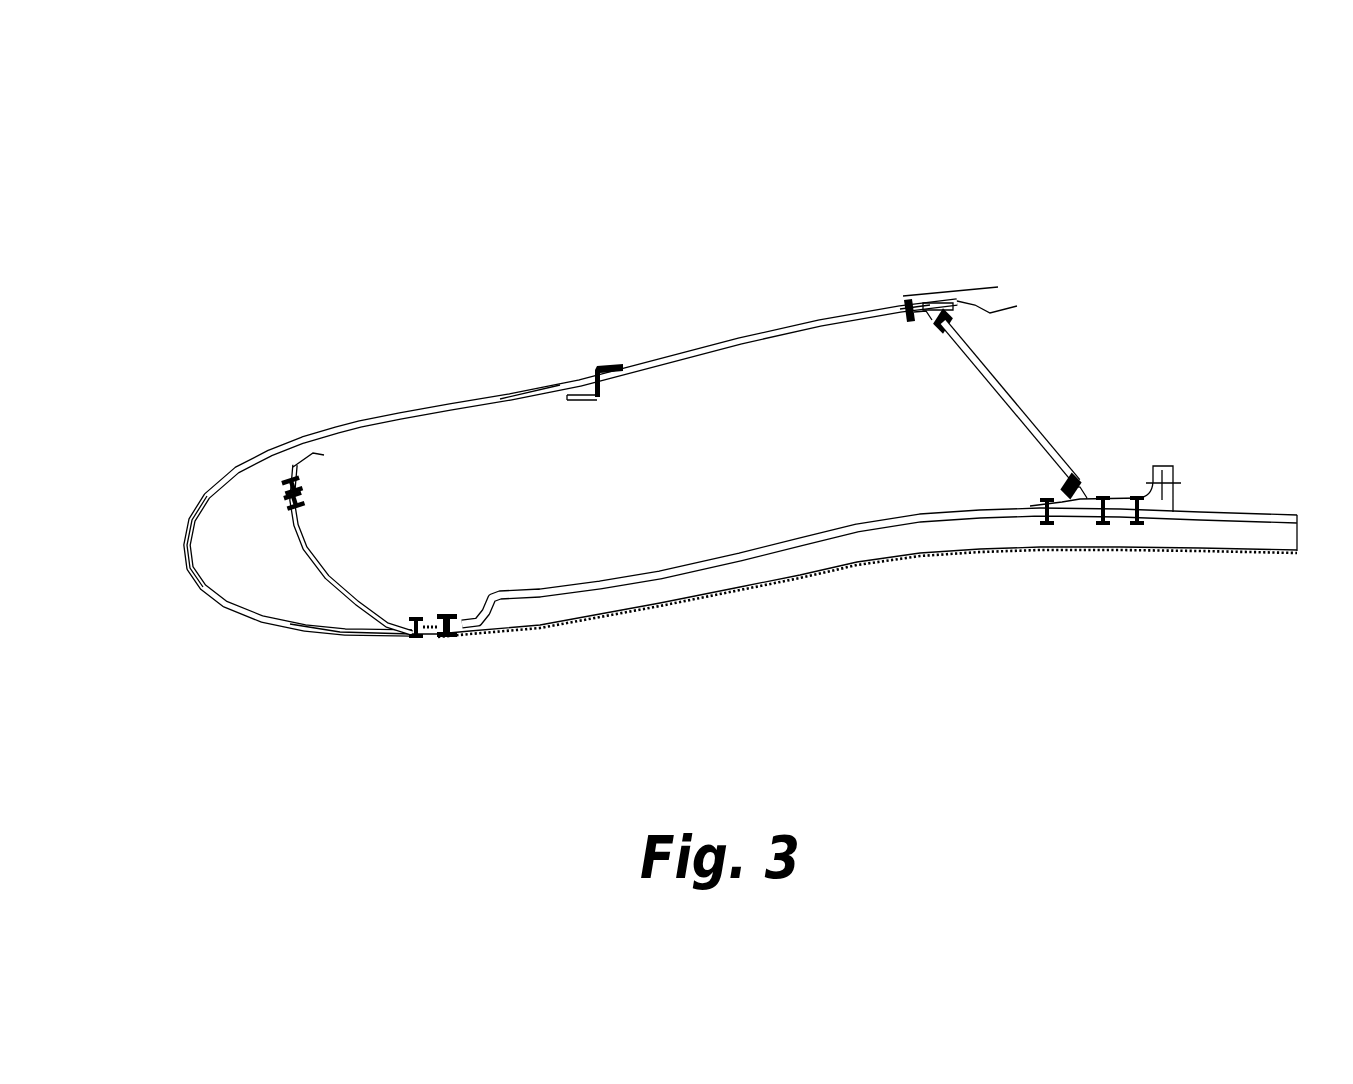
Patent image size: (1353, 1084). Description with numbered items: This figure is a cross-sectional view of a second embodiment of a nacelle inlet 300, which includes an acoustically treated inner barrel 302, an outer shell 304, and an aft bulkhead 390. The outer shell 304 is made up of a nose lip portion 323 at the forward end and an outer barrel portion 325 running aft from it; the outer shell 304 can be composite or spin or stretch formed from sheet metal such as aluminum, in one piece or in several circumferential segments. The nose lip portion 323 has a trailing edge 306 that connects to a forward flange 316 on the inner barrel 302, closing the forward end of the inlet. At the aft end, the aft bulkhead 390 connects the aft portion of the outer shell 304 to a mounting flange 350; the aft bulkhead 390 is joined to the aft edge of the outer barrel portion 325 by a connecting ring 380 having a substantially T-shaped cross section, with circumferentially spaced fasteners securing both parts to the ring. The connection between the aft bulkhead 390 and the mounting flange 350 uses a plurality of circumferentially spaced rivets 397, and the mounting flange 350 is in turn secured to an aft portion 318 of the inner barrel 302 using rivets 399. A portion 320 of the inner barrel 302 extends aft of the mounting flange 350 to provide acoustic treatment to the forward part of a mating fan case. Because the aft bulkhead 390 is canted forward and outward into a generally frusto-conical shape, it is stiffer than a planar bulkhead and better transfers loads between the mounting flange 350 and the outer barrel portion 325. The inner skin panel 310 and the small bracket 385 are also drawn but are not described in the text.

The nacelle inlet 300 is at (265, 186).
The acoustically treated inner barrel 302 is at (775, 594).
The outer shell 304 is at (382, 410).
The trailing edge 306 is at (462, 622).
The inner lower skin / spar panel 310 is at (593, 606).
The forward flange 316 is at (458, 640).
The aft portion 318 is at (1070, 528).
The portion 320 is at (1295, 572).
The nose lip portion 323 is at (182, 592).
The outer barrel portion 325 is at (528, 376).
The mounting flange 350 is at (1173, 466).
The connecting ring 380 is at (917, 329).
The Z bracket 385 is at (594, 402).
The aft bulkhead 390 is at (987, 380).
The rivets 397 is at (1090, 464).
The rivets 399 is at (1137, 527).